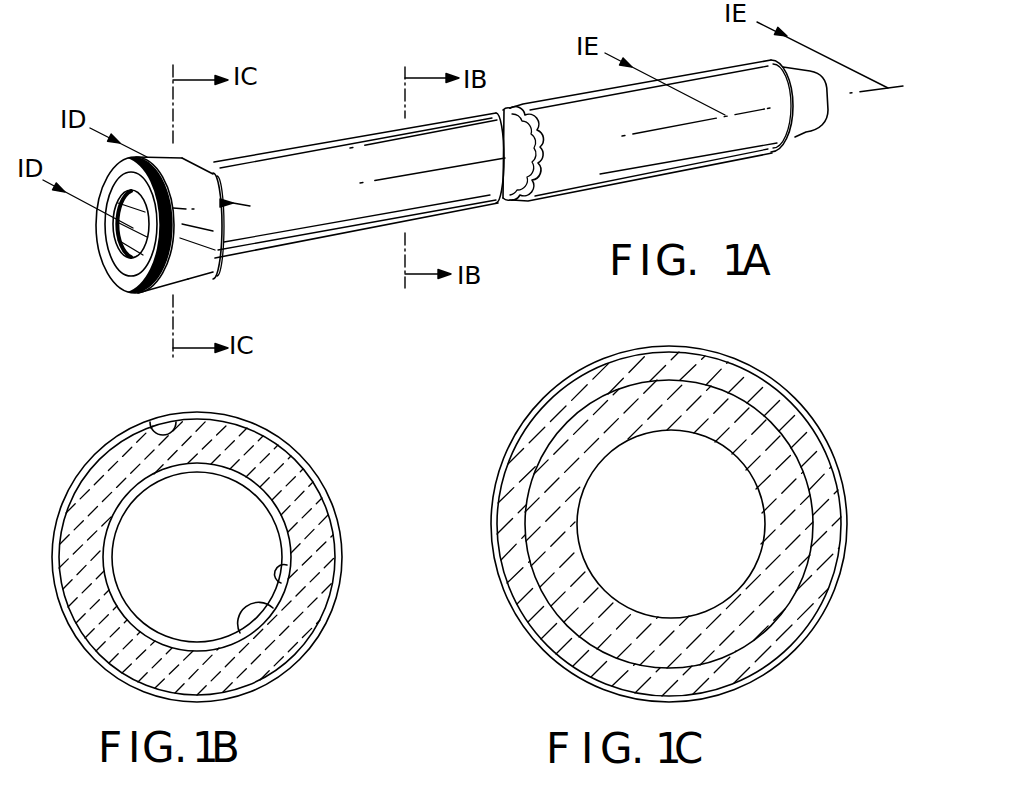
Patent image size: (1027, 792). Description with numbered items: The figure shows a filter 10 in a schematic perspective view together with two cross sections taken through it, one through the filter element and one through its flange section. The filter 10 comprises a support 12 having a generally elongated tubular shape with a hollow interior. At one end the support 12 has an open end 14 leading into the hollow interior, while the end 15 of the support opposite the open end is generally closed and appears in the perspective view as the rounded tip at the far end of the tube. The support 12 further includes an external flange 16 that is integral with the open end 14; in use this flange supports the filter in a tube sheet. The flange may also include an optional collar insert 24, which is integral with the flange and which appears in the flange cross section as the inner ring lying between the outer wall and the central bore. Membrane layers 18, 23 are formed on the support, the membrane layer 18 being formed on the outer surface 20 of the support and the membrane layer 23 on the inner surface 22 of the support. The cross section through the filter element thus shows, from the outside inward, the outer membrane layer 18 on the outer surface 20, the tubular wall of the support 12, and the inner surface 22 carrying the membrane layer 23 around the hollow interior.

In FIG. 1A, the filter 10 is at (322, 73).
In FIG. 1A, the support 12 is at (110, 283).
In FIG. 1B, the support 12 is at (285, 481).
In FIG. 1C, the support 12 is at (765, 389).
In FIG. 1A, the open end 14 is at (112, 241).
In FIG. 1A, the end 15 is at (812, 118).
In FIG. 1A, the external flange 16 is at (158, 290).
In FIG. 1B, the membrane layer 18 is at (280, 438).
In FIG. 1C, the membrane layer 18 is at (731, 356).
In FIG. 1B, the outer surface 20 is at (152, 418).
In FIG. 1B, the inner surface 22 is at (268, 611).
In FIG. 1B, the membrane layer 23 is at (290, 562).
In FIG. 1A, the collar insert 24 is at (113, 257).
In FIG. 1C, the collar insert 24 is at (590, 420).